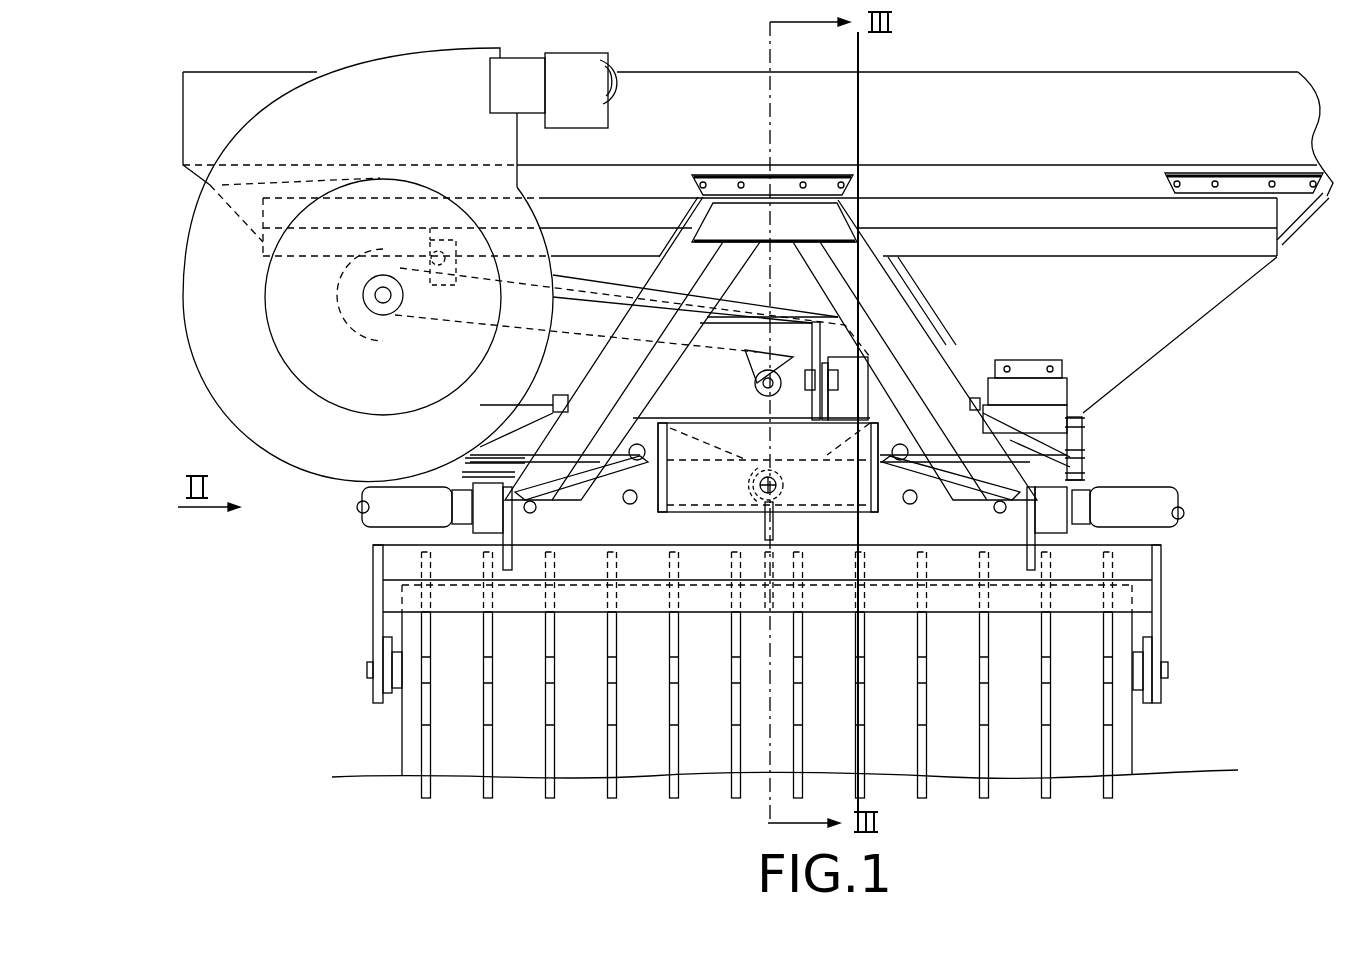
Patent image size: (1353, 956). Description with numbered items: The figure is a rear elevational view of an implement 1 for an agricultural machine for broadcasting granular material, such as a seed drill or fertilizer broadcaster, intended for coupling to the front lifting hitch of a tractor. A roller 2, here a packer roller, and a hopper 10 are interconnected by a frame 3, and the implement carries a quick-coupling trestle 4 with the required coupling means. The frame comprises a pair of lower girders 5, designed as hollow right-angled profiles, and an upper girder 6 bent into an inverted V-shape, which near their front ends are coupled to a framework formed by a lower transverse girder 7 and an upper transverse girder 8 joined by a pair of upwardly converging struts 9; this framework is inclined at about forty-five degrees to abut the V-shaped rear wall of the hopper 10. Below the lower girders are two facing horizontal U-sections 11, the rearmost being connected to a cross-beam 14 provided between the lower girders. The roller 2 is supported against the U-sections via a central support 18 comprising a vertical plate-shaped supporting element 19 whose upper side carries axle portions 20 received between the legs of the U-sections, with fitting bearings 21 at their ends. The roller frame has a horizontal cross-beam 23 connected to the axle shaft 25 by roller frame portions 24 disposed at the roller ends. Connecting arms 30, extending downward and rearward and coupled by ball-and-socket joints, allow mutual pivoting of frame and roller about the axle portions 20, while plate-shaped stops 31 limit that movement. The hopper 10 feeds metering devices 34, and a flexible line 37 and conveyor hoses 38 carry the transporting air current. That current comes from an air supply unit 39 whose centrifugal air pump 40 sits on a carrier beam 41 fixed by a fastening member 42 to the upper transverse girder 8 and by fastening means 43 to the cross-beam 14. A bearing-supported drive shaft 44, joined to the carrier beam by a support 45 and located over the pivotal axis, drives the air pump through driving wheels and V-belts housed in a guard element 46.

The implement 1 is at (1077, 305).
The roller 2 is at (1132, 750).
The frame 3 is at (890, 315).
The trestle 4 is at (717, 280).
The lower girders 5 is at (568, 393).
The upper girder 6 is at (862, 217).
The lower transverse girder 7 is at (1063, 390).
The upper transverse girder 8 is at (980, 210).
The struts 9 is at (660, 250).
The hopper 10 is at (1222, 275).
The U-sections 11 is at (750, 462).
The cross-beam 14 is at (684, 425).
The central support 18 is at (792, 535).
The supporting element 19 is at (763, 531).
The axle portions 20 is at (753, 485).
The bearings 21 is at (785, 485).
The cross-beam 23 is at (388, 567).
The roller frame portions 24 is at (375, 630).
The axle shaft 25 is at (368, 678).
The connecting arm 30 is at (607, 475).
The stops 31 is at (1083, 453).
The metering devices 34 is at (1103, 435).
The flexible line 37 is at (603, 100).
The conveyor hoses 38 is at (360, 512).
The air supply unit 39 is at (222, 353).
The air pump 40 is at (283, 452).
The carrier beam 41 is at (587, 307).
The fastening member 42 is at (440, 245).
The fastening means 43 is at (830, 372).
The drive shaft 44 is at (760, 388).
The support 45 is at (760, 357).
The guard element 46 is at (556, 380).